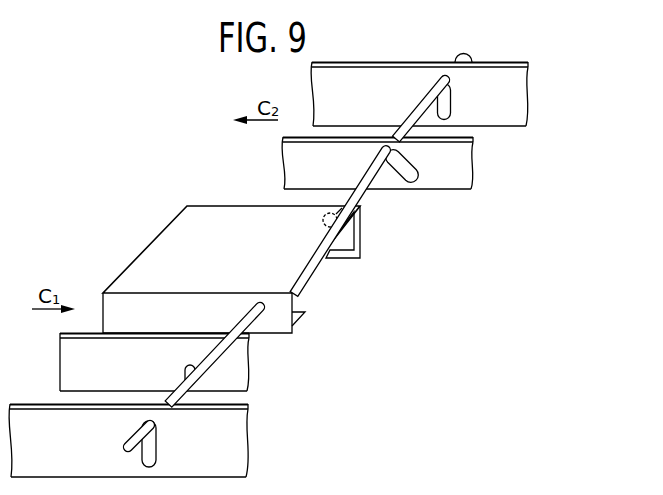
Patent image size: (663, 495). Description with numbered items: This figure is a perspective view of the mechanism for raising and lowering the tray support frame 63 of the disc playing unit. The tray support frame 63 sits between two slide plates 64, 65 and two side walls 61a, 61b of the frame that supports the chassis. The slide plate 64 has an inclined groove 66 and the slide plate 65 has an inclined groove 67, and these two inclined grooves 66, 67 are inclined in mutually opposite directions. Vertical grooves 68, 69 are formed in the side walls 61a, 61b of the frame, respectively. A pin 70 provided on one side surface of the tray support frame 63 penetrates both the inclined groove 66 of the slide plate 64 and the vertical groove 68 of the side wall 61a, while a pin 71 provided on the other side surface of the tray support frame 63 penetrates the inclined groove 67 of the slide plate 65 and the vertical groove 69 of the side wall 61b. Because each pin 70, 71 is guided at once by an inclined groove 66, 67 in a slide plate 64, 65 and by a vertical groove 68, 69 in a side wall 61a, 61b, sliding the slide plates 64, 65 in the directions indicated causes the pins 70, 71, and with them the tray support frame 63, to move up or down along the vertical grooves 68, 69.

The side wall 61a is at (240, 439).
The side wall 61b is at (520, 97).
The tray support frame 63 is at (155, 240).
The slide plate 64 is at (244, 371).
The slide plate 65 is at (468, 172).
The inclined groove 66 is at (197, 366).
The inclined groove 67 is at (407, 184).
The vertical groove 68 is at (157, 452).
The vertical groove 69 is at (452, 103).
The pin 70 is at (262, 324).
The pin 71 is at (418, 107).